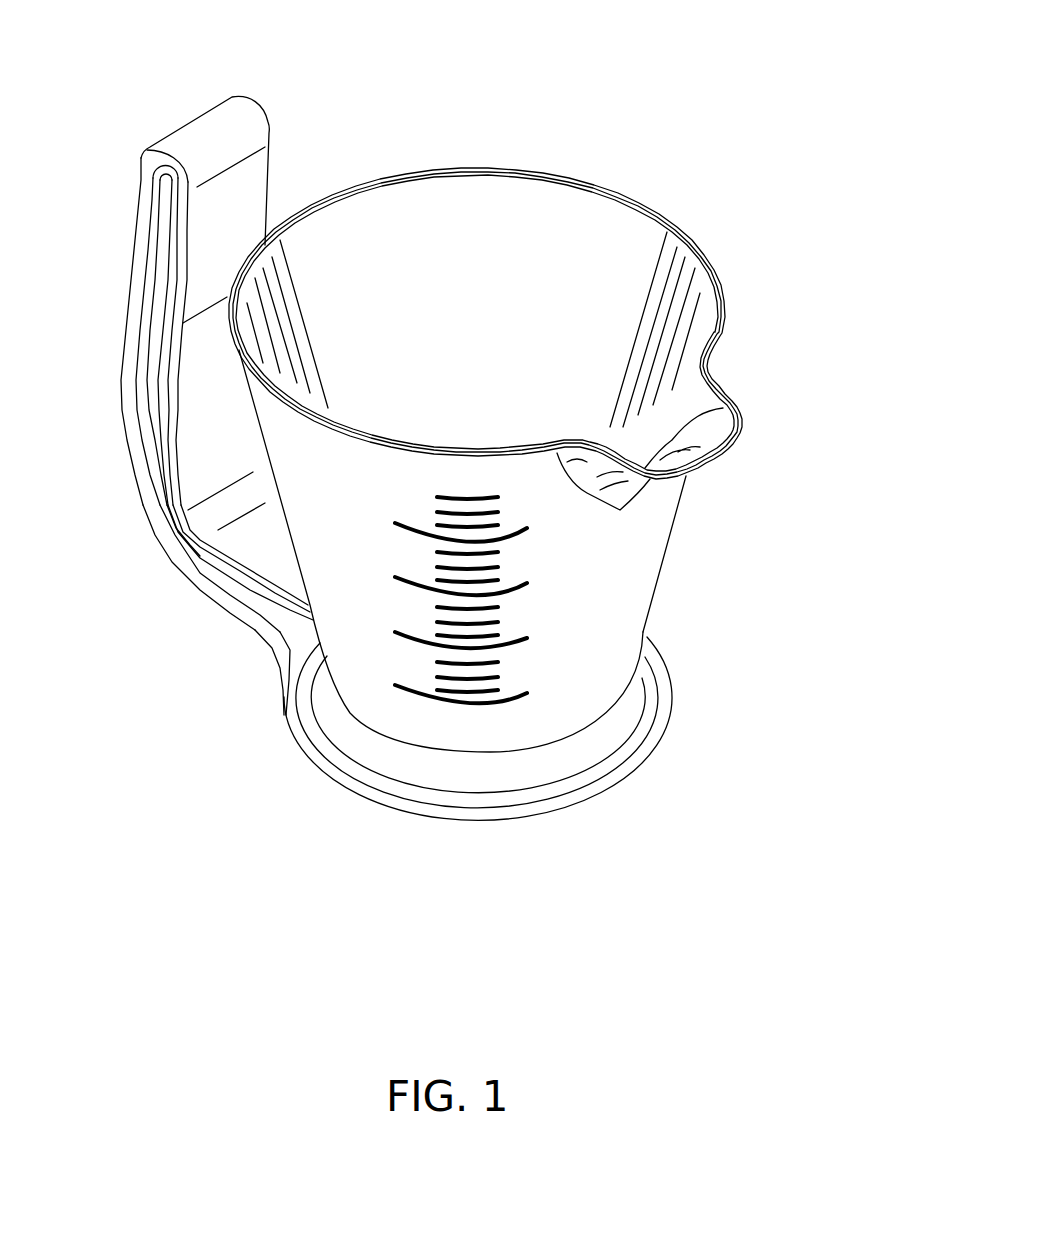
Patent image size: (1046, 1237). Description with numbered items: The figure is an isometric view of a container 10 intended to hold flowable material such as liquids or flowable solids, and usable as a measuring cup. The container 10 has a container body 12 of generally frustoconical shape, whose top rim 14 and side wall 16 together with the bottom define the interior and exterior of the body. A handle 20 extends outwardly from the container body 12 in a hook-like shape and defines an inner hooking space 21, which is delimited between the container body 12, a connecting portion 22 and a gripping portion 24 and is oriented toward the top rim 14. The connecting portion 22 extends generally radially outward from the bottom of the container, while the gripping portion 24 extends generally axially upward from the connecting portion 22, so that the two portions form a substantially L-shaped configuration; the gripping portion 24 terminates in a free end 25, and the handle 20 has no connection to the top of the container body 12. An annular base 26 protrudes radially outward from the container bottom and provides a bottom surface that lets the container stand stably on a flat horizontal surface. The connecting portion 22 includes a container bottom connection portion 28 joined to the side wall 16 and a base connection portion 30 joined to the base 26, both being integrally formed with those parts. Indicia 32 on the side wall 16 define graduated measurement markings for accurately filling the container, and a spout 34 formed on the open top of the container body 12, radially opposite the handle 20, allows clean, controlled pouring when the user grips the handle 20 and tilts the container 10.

The container 10 is at (656, 70).
The container body 12 is at (691, 516).
The top rim 14 is at (650, 202).
The side wall 16 is at (613, 540).
The handle 20 is at (118, 284).
The inner hooking space 21 is at (200, 413).
The connecting portion 22 is at (178, 568).
The gripping portion 24 is at (118, 415).
The free end 25 is at (204, 131).
The annular base 26 is at (660, 739).
The container bottom connection portion 28 is at (293, 600).
The base connection portion 30 is at (327, 768).
The indicia 32 is at (498, 594).
The spout 34 is at (758, 432).